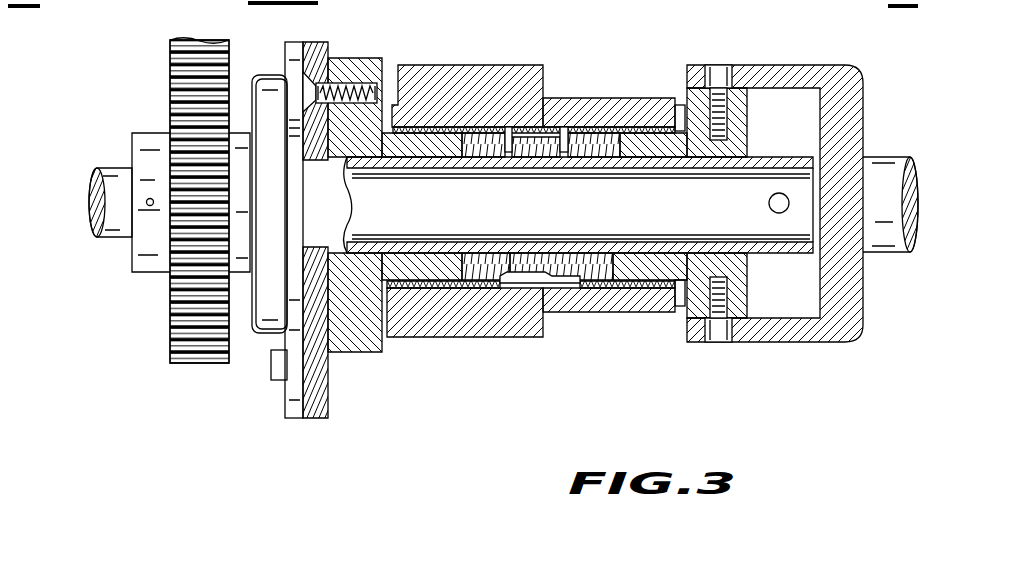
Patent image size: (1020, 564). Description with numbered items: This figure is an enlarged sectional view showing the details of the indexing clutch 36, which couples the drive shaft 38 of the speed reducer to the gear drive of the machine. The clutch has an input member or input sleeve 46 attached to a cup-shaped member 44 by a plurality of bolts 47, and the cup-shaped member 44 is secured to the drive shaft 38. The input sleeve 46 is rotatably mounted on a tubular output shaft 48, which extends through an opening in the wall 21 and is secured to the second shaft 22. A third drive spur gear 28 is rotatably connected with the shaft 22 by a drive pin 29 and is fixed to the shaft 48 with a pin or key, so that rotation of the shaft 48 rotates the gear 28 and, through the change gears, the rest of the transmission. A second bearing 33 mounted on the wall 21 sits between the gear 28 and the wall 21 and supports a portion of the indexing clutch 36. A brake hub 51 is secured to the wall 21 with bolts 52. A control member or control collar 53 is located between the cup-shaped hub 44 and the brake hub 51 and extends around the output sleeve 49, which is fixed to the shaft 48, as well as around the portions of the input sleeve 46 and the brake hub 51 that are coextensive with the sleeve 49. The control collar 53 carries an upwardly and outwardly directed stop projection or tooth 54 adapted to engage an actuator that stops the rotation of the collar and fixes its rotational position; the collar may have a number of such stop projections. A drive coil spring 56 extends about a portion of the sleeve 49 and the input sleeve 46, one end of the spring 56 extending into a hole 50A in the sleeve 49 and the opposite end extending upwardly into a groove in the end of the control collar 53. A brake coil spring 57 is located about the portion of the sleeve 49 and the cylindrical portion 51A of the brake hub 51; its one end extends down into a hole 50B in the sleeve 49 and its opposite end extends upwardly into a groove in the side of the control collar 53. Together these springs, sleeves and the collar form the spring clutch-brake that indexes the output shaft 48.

The wall 21 is at (316, 416).
The second shaft 22 is at (112, 170).
The third drive spur gear 28 is at (196, 345).
The drive pin 29 is at (148, 206).
The second bearing 33 is at (268, 322).
The indexing clutch 36 is at (618, 62).
The drive shaft 38 is at (885, 156).
The cup-shaped member 44 is at (792, 72).
The input sleeve 46 is at (660, 270).
The bolts 47 is at (712, 340).
The tubular output shaft 48 is at (625, 212).
The output sleeve 49 is at (490, 145).
The hole 50A is at (564, 150).
The hole 50B is at (509, 150).
The brake hub 51 is at (360, 340).
The cylindrical portion 51A is at (427, 260).
The bolts 52 is at (352, 100).
The control collar 53 is at (550, 108).
The stop projection 54 is at (450, 82).
The drive coil spring 56 is at (640, 128).
The brake coil spring 57 is at (425, 132).